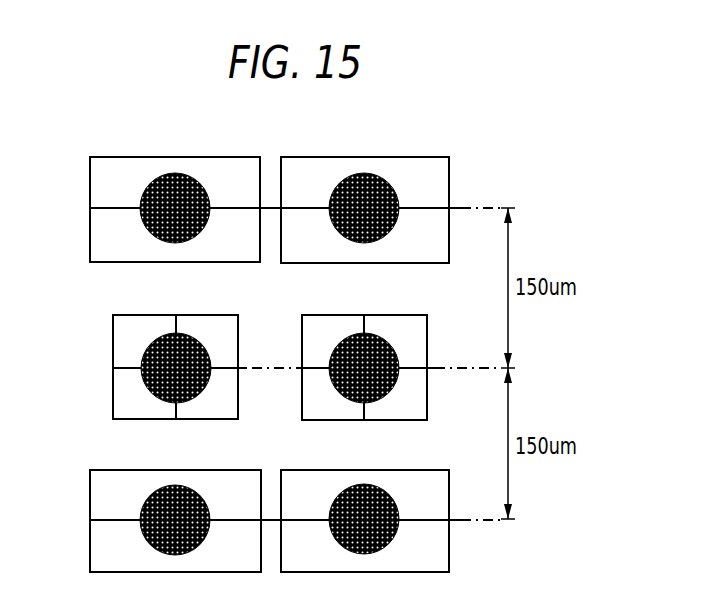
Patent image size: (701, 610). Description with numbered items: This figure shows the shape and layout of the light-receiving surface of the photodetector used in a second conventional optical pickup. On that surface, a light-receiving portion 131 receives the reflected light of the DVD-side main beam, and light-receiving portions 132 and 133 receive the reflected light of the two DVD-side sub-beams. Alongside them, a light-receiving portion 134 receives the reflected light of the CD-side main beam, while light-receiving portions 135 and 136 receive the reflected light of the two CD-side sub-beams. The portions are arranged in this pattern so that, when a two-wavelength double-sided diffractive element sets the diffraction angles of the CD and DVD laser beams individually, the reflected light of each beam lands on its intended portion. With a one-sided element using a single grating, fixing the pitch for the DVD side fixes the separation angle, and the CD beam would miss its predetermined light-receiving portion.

The light-receiving portion 131 is at (208, 315).
The light-receiving portion 132 is at (229, 157).
The light-receiving portion 133 is at (243, 470).
The light-receiving portion 134 is at (398, 315).
The light-receiving portion 135 is at (424, 157).
The light-receiving portion 136 is at (418, 470).